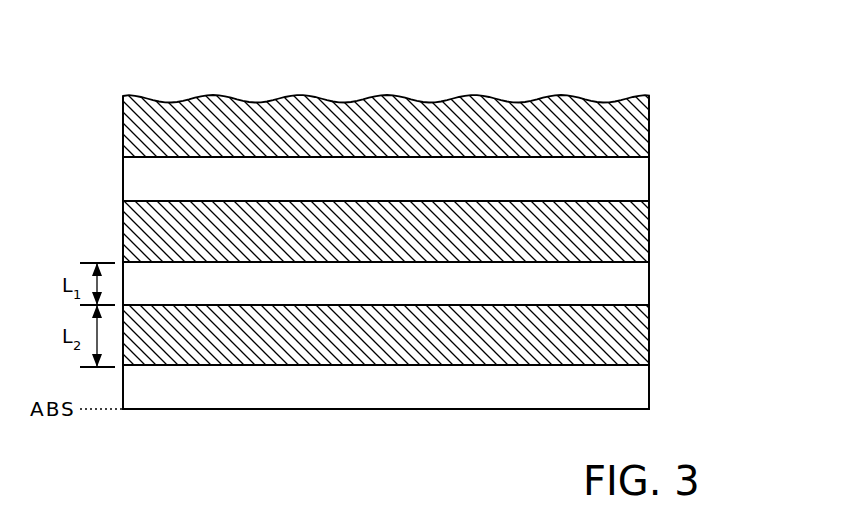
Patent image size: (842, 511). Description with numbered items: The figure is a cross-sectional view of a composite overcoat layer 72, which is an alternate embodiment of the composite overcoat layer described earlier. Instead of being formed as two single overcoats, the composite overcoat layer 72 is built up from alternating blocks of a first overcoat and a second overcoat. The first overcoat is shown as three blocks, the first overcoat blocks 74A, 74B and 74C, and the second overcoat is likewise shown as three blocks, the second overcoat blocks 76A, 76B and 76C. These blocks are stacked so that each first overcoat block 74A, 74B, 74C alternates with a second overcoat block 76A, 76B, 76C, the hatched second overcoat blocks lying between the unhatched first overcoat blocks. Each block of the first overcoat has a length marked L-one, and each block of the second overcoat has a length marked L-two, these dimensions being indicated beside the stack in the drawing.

The composite overcoat layer 72 is at (675, 87).
The second overcoat block 76C is at (627, 126).
The first overcoat block 74C is at (627, 178).
The second overcoat block 76B is at (627, 231).
The first overcoat block 74B is at (627, 283).
The second overcoat block 76A is at (627, 335).
The first overcoat block 74A is at (627, 387).